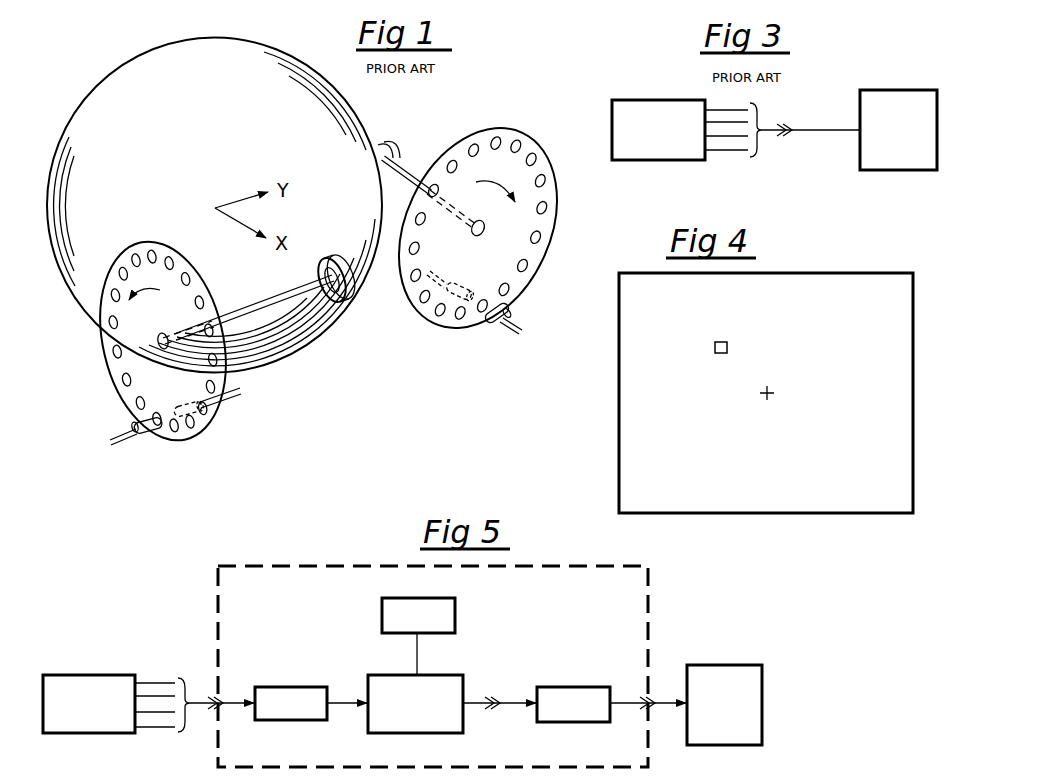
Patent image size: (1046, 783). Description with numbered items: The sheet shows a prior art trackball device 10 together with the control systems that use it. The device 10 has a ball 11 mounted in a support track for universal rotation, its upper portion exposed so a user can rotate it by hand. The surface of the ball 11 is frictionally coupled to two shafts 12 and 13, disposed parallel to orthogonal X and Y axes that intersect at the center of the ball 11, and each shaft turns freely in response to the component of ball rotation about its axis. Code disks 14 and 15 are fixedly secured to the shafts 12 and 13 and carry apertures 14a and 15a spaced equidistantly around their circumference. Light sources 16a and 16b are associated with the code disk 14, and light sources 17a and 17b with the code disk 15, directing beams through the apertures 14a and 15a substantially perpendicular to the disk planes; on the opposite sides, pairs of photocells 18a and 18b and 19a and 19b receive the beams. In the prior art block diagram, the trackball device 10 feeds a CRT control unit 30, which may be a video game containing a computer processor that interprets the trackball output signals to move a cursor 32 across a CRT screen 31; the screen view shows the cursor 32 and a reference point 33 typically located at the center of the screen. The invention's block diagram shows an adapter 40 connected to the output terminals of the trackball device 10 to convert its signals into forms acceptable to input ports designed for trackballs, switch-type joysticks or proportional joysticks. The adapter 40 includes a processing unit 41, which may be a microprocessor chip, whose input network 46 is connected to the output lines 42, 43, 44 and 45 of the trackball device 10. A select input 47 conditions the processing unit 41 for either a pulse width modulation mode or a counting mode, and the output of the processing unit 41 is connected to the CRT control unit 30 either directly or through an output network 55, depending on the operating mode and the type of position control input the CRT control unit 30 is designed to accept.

In FIG. 1, the trackball device 10 is at (212, 198).
In FIG. 3, the trackball device 10 is at (650, 97).
In FIG. 5, the trackball device 10 is at (102, 673).
In FIG. 1, the ball 11 is at (82, 130).
In FIG. 1, the shaft 12 is at (400, 176).
In FIG. 1, the shaft 13 is at (262, 302).
In FIG. 1, the code disk 14 is at (484, 227).
In FIG. 1, the apertures 14a is at (545, 196).
In FIG. 1, the code disk 15 is at (153, 341).
In FIG. 1, the apertures 15a is at (122, 363).
In FIG. 1, the light source 16a is at (462, 287).
In FIG. 1, the light source 16b is at (460, 322).
In FIG. 1, the light source 17a is at (190, 436).
In FIG. 1, the light source 17b is at (186, 404).
In FIG. 1, the photocell 18a is at (508, 314).
In FIG. 1, the photocell 18b is at (494, 330).
In FIG. 1, the photocell 19a is at (146, 438).
In FIG. 1, the photocell 19b is at (131, 414).
In FIG. 3, the CRT control unit 30 is at (898, 88).
In FIG. 5, the CRT control unit 30 is at (733, 664).
In FIG. 4, the CRT screen 31 is at (803, 271).
In FIG. 4, the cursor 32 is at (722, 342).
In FIG. 4, the reference point 33 is at (770, 388).
In FIG. 5, the adapter 40 is at (334, 563).
In FIG. 5, the processing unit 41 is at (452, 675).
In FIG. 5, the output line 42 is at (143, 683).
In FIG. 5, the output line 43 is at (166, 696).
In FIG. 5, the output line 44 is at (146, 712).
In FIG. 5, the output line 45 is at (162, 727).
In FIG. 5, the input network 46 is at (290, 687).
In FIG. 5, the select input 47 is at (455, 612).
In FIG. 5, the output network 55 is at (576, 687).